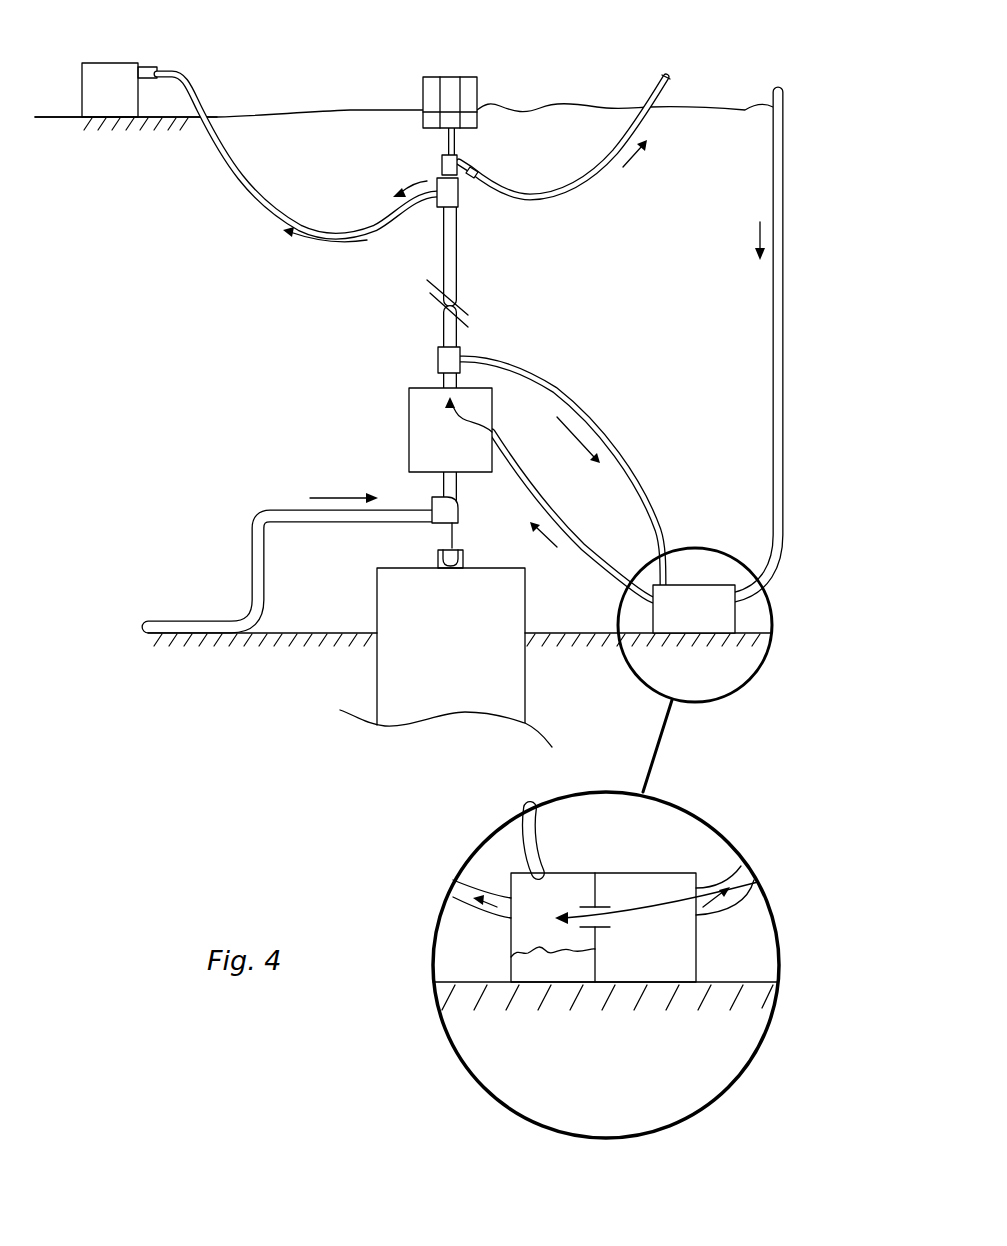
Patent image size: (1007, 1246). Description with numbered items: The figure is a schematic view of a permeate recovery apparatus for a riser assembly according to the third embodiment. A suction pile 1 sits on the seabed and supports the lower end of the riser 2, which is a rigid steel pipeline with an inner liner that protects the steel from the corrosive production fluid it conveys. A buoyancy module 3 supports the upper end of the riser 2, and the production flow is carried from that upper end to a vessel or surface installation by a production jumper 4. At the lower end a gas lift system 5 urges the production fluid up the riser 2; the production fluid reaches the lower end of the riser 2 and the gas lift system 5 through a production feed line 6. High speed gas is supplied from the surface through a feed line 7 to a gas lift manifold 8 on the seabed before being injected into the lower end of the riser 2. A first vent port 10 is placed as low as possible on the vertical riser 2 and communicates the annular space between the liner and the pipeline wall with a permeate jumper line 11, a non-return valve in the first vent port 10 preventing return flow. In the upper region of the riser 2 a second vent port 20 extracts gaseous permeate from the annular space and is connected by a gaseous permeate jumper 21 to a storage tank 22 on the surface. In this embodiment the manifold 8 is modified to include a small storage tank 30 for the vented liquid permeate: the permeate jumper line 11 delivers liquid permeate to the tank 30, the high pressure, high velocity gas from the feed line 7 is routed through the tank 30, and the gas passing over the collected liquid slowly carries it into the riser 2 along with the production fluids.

The suction pile 1 is at (463, 692).
The riser 2 is at (442, 252).
The buoyancy module 3 is at (470, 95).
The production jumper 4 is at (585, 183).
The gas lift system 5 is at (459, 456).
The production feed lines 6 is at (267, 525).
The feed line 7 is at (772, 390).
The gas lift manifold 8 is at (704, 625).
The first vent port 10 is at (445, 360).
The permeate jumper line 11 is at (538, 382).
The second vent port 20 is at (450, 193).
The gaseous permeate jumper 21 is at (248, 185).
The storage tank 22 is at (113, 73).
The storage tank 30 is at (511, 964).